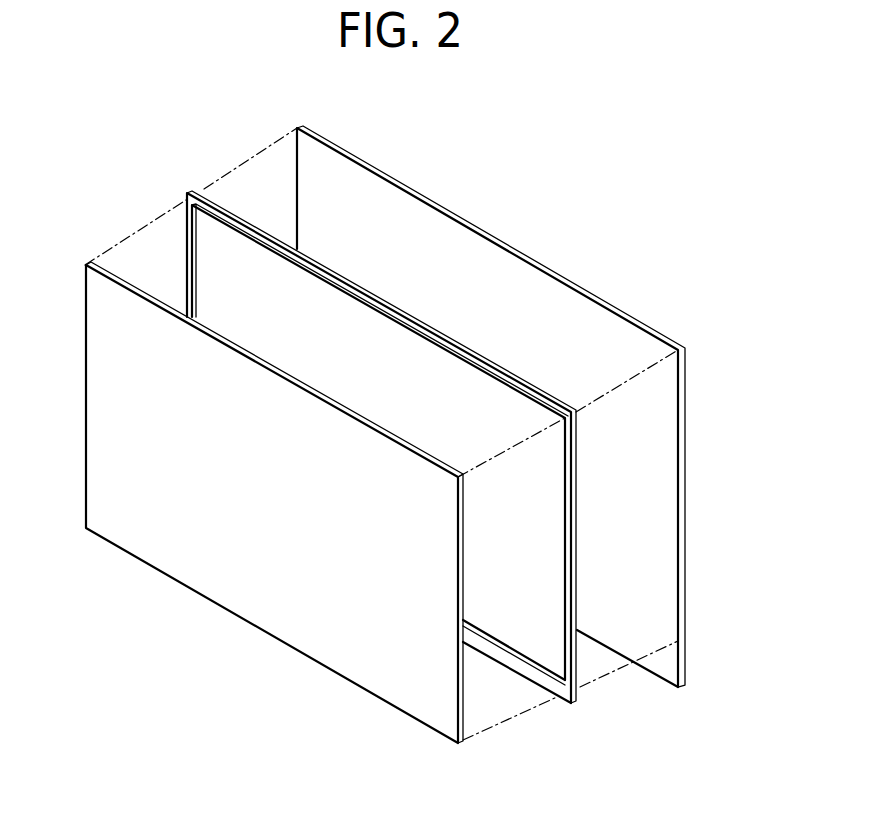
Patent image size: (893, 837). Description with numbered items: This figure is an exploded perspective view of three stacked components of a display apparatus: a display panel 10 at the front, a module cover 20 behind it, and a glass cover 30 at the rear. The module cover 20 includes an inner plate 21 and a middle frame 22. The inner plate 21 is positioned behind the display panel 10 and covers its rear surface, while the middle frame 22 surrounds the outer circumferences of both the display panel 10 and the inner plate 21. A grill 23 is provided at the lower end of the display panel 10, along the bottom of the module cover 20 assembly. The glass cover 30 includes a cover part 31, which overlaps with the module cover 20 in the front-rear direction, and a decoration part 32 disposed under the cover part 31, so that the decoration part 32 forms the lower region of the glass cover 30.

The display panel 10 is at (101, 410).
The module cover 20 is at (128, 114).
The inner plate 21 is at (213, 255).
The middle frame 22 is at (218, 207).
The grill 23 is at (523, 668).
The glass cover 30 is at (746, 545).
The cover part 31 is at (662, 553).
The decoration part 32 is at (670, 665).